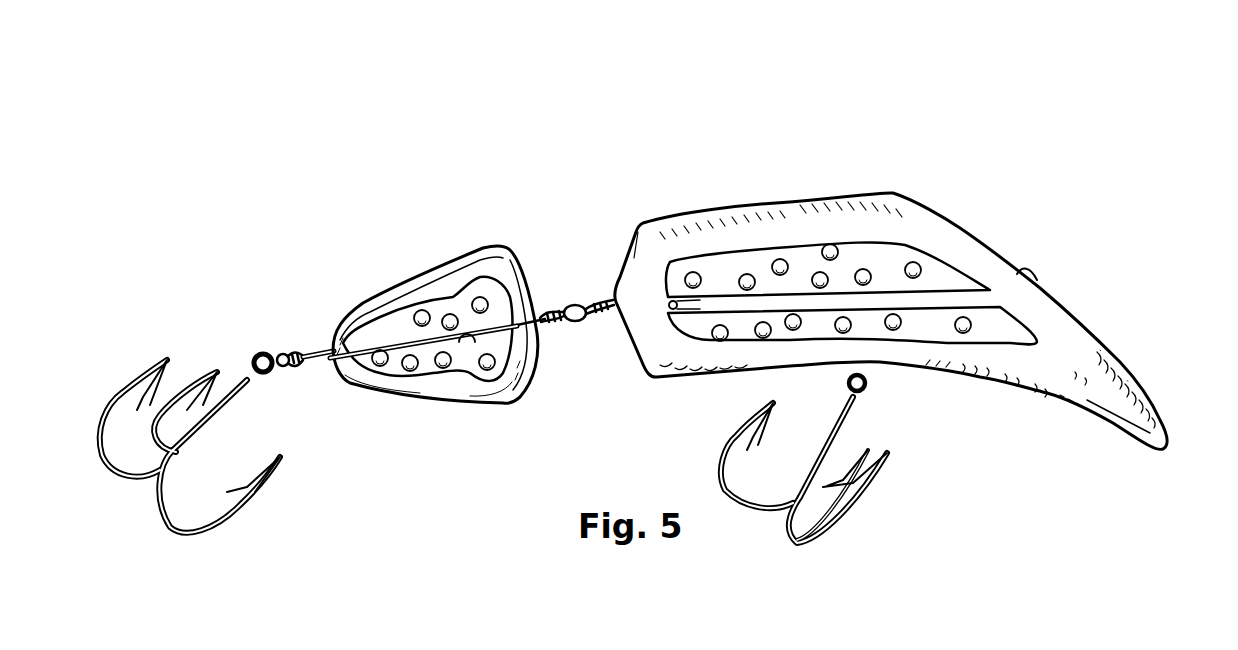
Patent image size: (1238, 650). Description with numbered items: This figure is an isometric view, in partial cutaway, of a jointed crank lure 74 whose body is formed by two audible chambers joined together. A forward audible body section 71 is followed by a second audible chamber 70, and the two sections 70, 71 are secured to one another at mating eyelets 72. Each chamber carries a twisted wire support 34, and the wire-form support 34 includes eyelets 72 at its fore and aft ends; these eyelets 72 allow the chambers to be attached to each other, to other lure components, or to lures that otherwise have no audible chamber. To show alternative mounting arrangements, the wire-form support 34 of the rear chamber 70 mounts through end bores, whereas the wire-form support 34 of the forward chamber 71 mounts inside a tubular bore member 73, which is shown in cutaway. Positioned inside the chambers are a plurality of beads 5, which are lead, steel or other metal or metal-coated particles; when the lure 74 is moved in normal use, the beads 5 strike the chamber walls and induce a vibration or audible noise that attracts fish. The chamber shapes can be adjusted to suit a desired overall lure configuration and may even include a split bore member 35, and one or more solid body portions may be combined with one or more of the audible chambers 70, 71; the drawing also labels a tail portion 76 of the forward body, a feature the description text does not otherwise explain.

The beads 5 is at (442, 369).
The twisted wire support 34 is at (310, 354).
The split bore member 35 is at (498, 333).
The second audible chamber 70 is at (377, 292).
The forward audible body section 71 is at (700, 208).
The eyelets 72 is at (255, 351).
The tubular bore member 73 is at (887, 290).
The lure 74 is at (999, 75).
The tail portion 76 is at (1106, 391).